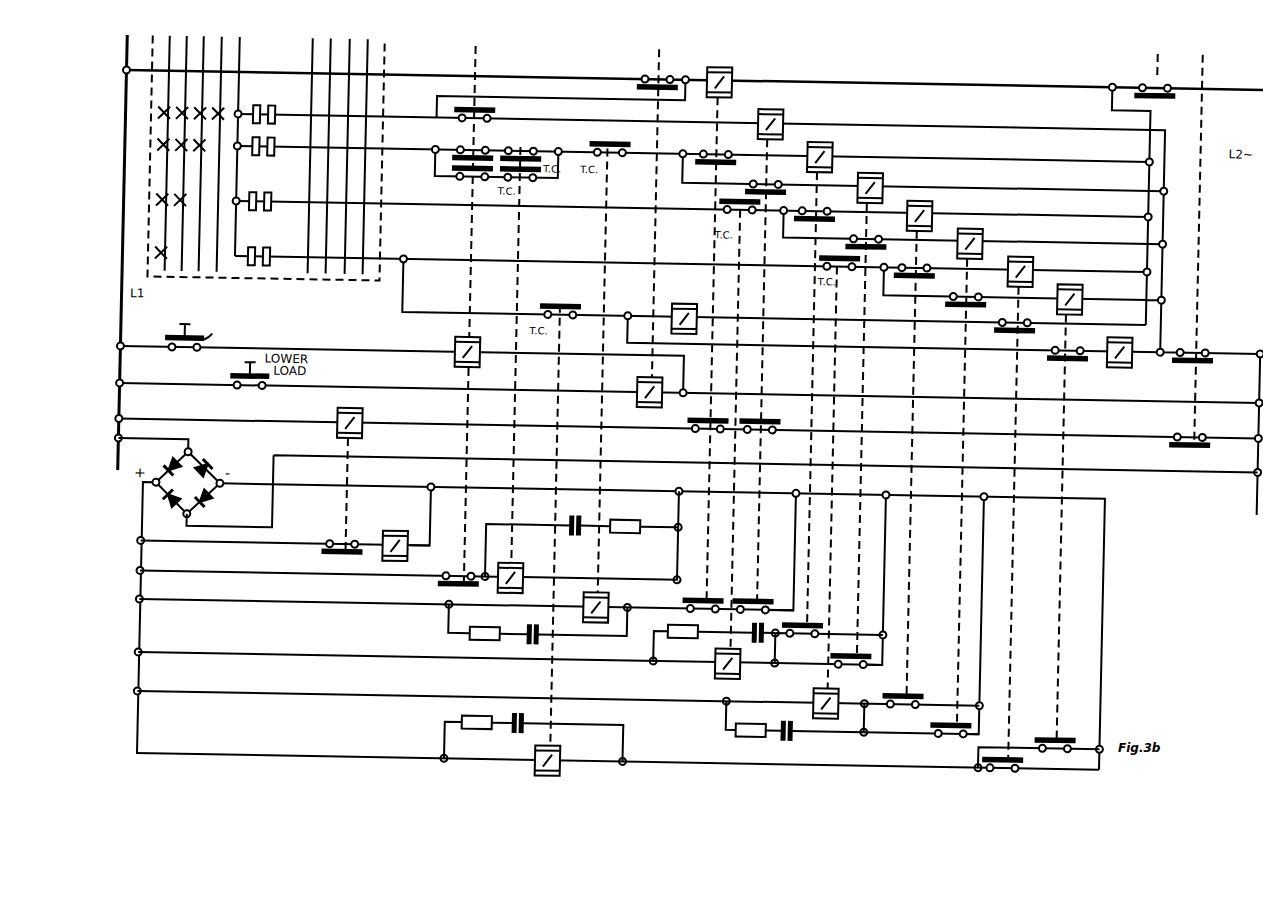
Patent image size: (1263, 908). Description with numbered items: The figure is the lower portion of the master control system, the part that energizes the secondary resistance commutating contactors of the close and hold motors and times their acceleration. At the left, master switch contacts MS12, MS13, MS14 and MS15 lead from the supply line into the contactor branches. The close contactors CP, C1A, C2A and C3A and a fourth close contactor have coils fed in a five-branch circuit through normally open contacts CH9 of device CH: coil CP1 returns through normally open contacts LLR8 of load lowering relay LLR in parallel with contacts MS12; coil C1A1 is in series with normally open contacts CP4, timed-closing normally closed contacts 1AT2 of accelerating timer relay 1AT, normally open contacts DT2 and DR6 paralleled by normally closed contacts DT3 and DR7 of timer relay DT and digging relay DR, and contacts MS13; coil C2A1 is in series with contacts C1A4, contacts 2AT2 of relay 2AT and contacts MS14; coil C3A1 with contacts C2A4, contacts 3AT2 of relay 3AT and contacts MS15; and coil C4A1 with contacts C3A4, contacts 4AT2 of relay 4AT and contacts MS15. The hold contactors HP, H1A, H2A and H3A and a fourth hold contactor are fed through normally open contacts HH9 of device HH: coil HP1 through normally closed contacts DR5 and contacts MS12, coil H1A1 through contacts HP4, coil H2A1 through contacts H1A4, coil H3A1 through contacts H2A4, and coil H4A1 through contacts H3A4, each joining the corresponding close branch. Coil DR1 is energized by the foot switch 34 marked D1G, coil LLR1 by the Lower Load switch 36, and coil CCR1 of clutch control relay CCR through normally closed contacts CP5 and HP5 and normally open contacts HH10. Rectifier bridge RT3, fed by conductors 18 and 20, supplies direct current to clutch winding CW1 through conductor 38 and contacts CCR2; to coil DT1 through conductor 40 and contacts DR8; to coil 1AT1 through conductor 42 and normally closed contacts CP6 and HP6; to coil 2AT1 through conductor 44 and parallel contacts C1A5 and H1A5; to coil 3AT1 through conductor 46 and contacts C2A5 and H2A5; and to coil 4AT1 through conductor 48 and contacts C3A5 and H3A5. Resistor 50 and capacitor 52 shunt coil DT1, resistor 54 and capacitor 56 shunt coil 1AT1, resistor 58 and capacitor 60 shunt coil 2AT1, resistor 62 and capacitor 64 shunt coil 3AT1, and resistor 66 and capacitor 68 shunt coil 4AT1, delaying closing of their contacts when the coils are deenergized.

The conductor 18 is at (157, 440).
The conductor 20 is at (1084, 458).
The pushbutton foot switch 34 is at (218, 332).
The pushbutton Lower Load switch 36 is at (234, 375).
The conductor 38 is at (230, 544).
The conductor 40 is at (239, 574).
The conductor 42 is at (244, 604).
The conductor 44 is at (249, 656).
The conductor 46 is at (257, 695).
The conductor 48 is at (262, 757).
The resistor 50 is at (634, 511).
The capacitor 52 is at (582, 509).
The resistor 54 is at (472, 635).
The capacitor 56 is at (538, 636).
The resistor 58 is at (696, 630).
The capacitor 60 is at (760, 636).
The resistor 62 is at (767, 729).
The capacitor 64 is at (803, 733).
The resistor 66 is at (492, 729).
The capacitor 68 is at (530, 730).
The full-wave rectifier bridge RT3 is at (200, 488).
The master switch contacts MS12 is at (283, 122).
The master switch contacts MS13 is at (282, 152).
The master switch contacts MS14 is at (276, 210).
The master switch contacts MS15 is at (275, 265).
The DIG relay DR is at (476, 313).
The timer relay DT is at (529, 355).
The accelerating timer relay 4AT is at (572, 526).
The accelerating timer relay 1AT is at (612, 440).
The load lowering relay LLR is at (664, 212).
The close motor secondary resistance commutating contactor CP is at (691, 348).
The accelerating timer relay 2AT is at (743, 429).
The hold motor secondary resistance commutating contactor HP is at (775, 369).
The close motor secondary resistance commutating contactor C1A is at (792, 397).
The accelerating timer relay 3AT is at (841, 477).
The hold motor secondary resistance commutating contactor H1A is at (879, 429).
The close motor secondary resistance commutating contactor C2A is at (893, 462).
The hold motor secondary resistance commutating contactor H2A is at (943, 491).
The close motor secondary resistance commutating contactor C3A is at (991, 522).
The hold motor secondary resistance commutating contactor H3A is at (1044, 526).
The hoist hold relay HH is at (1212, 251).
The crowd hold relay CH is at (1171, 66).
The clutch control relay CCR is at (363, 495).
The normally open contacts LLR8 is at (644, 72).
The operating coil CP1 is at (736, 78).
The normally open contacts CH9 is at (1138, 83).
The normally closed contacts DR5 is at (457, 123).
The operating coil HP1 is at (789, 122).
The normally open contacts DR6 is at (479, 145).
The normally open contacts DT2 is at (524, 146).
The normally closed contacts DR7 is at (462, 182).
The normally closed contacts DT3 is at (527, 182).
The normally closed contacts 1AT2 is at (616, 159).
The normally open contacts CP4 is at (721, 150).
The operating coil C1A1 is at (842, 154).
The normally open contacts HP4 is at (773, 179).
The operating coil H1A1 is at (892, 186).
The normally closed contacts 2AT2 is at (739, 206).
The normally open contacts C1A4 is at (825, 206).
The operating coil C2A1 is at (940, 214).
The normally open contacts H1A4 is at (875, 238).
The operating coil H2A1 is at (989, 244).
The normally closed contacts 3AT2 is at (839, 263).
The normally open contacts C2A4 is at (923, 264).
The operating coil C3A1 is at (1039, 270).
The normally open contacts H2A4 is at (974, 291).
The operating coil H3A1 is at (1088, 298).
The normally closed contacts 4AT2 is at (569, 320).
The operating coil C4A1 is at (682, 311).
The normally open contacts C3A4 is at (1023, 318).
The normally open contacts H3A4 is at (1076, 346).
The operating coil H4A1 is at (1137, 359).
The normally open contacts HH9 is at (1203, 349).
The DIG pushbutton foot switch D1G is at (185, 330).
The operating coil DR1 is at (477, 346).
The operating coil LLR1 is at (666, 399).
The operating coil CCR1 is at (368, 421).
The normally closed contacts CP5 is at (694, 434).
The normally closed contacts HP5 is at (768, 435).
The normally open contacts HH10 is at (1203, 433).
The normally open contacts CCR2 is at (329, 539).
The clutch winding CW1 is at (396, 535).
The normally open contacts DR8 is at (452, 570).
The operating coil DT1 is at (522, 571).
The operating coil 1AT1 is at (613, 606).
The normally closed contacts CP6 is at (692, 600).
The normally closed contacts HP6 is at (760, 601).
The operating coil 2AT1 is at (707, 667).
The normally closed contacts C1A5 is at (829, 644).
The normally closed contacts H1A5 is at (858, 671).
The operating coil 3AT1 is at (807, 703).
The normally closed contacts C2A5 is at (903, 710).
The normally closed contacts H2A5 is at (921, 741).
The operating coil 4AT1 is at (576, 766).
The normally closed contacts C3A5 is at (1011, 774).
The normally closed contacts H3A5 is at (1039, 753).